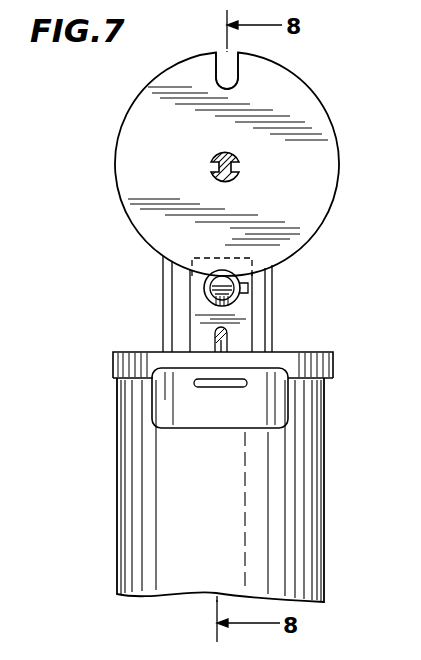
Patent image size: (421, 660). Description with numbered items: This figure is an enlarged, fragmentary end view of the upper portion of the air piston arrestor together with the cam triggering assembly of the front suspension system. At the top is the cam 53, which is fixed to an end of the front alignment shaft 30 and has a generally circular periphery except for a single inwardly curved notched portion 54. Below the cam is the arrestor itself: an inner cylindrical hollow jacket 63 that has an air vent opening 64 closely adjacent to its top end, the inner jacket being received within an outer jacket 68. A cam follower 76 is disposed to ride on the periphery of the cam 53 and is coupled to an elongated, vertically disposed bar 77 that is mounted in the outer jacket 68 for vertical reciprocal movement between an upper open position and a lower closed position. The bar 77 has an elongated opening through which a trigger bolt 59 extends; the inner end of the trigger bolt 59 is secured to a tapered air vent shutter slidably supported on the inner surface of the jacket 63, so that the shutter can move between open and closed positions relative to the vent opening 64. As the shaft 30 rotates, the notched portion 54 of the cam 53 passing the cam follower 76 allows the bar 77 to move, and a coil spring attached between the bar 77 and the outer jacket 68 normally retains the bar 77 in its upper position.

The front alignment shaft 30 is at (213, 155).
The cam 53 is at (336, 174).
The notched portion 54 is at (240, 52).
The trigger bolt 59 is at (214, 334).
The inner cylindrical hollow jacket 63 is at (267, 398).
The air vent opening 64 is at (207, 388).
The outer jacket 68 is at (305, 495).
The cam follower 76 is at (227, 292).
The bar 77 is at (232, 325).